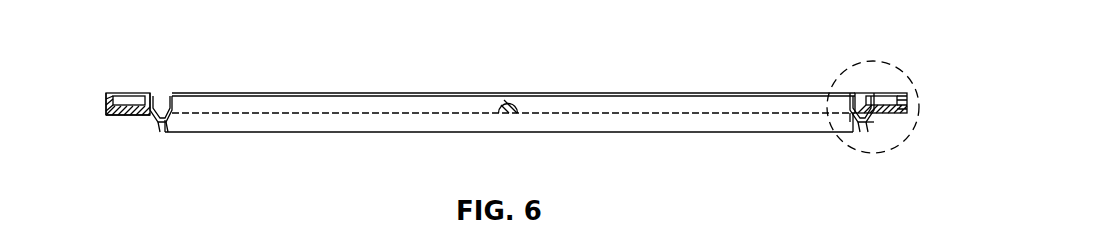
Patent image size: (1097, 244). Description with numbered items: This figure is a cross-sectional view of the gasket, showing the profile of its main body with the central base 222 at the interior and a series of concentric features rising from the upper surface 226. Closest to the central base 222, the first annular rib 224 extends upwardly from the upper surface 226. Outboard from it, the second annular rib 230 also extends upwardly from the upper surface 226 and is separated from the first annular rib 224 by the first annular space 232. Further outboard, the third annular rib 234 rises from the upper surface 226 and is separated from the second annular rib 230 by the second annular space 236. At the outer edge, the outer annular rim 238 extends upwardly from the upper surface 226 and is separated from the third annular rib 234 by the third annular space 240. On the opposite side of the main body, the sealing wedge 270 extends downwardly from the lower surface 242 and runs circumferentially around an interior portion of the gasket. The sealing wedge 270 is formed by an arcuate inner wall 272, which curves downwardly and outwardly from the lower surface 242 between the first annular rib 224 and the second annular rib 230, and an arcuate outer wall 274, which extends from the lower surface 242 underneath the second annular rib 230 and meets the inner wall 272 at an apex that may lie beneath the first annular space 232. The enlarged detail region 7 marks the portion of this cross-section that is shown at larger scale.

The detail view circle 7 is at (852, 63).
The central base 222 is at (582, 113).
The first annular rib 224 is at (178, 98).
The upper surface 226 is at (348, 113).
The second annular rib 230 is at (152, 92).
The first annular space 232 is at (163, 93).
The third annular rib 234 is at (125, 101).
The second annular space 236 is at (142, 116).
The outer annular rim 238 is at (107, 103).
The third annular space 240 is at (905, 93).
The lower surface 242 is at (637, 124).
The sealing wedge 270 is at (160, 130).
The arcuate inner wall 272 is at (845, 130).
The arcuate outer wall 274 is at (868, 128).